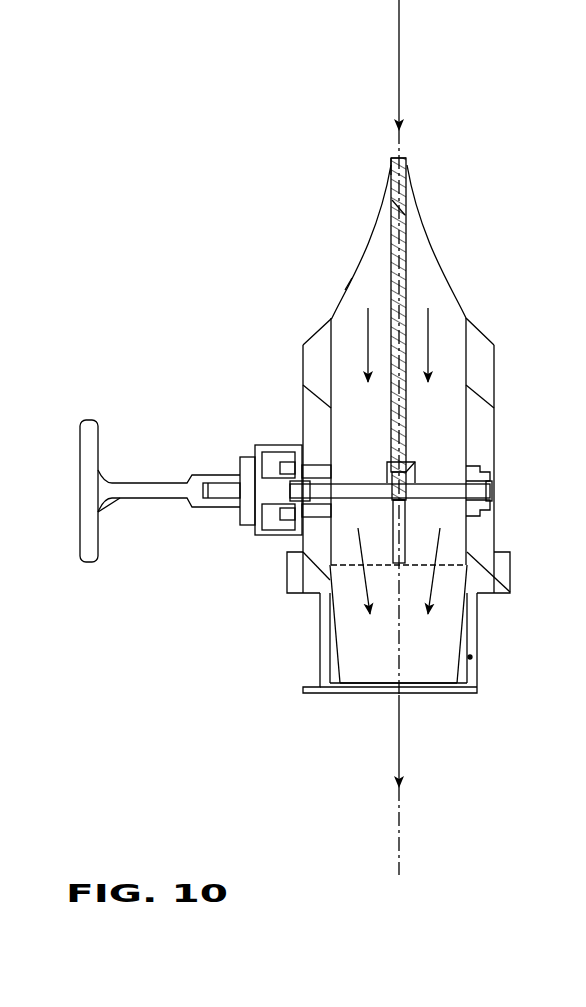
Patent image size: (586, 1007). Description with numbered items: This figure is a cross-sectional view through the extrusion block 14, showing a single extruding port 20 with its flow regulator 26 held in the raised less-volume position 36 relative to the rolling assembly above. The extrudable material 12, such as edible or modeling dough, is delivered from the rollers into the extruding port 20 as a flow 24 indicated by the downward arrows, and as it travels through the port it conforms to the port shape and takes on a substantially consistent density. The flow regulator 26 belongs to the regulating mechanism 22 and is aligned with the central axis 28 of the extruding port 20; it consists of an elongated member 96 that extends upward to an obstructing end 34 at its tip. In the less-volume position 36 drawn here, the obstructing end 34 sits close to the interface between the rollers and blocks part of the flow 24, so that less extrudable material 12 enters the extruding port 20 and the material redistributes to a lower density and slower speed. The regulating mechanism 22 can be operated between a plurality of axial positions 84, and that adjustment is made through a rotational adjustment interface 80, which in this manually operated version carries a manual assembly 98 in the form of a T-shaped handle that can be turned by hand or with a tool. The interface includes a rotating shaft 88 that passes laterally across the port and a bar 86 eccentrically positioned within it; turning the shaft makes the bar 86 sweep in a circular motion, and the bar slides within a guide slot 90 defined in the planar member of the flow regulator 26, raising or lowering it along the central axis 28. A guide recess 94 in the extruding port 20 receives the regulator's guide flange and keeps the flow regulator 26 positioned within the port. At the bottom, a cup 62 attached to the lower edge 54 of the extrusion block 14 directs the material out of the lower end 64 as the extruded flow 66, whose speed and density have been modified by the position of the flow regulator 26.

The extrudable material 12 is at (392, 70).
The extrusion block 14 is at (526, 520).
The extruding port 20 is at (330, 312).
The regulating mechanism 22 is at (256, 322).
The flow 24 is at (400, 73).
The flow regulator 26 is at (407, 277).
The central axis 28 is at (400, 838).
The obstructing end 34 is at (400, 157).
The less-volume position 36 is at (384, 160).
The lower edge 54 is at (303, 593).
The cup 62 is at (472, 657).
The lower end 64 is at (352, 696).
The extruded flow 66 is at (401, 740).
The rotational adjustment interface 80 is at (76, 536).
The plurality of axial positions 84 is at (366, 278).
The bar 86 is at (411, 462).
The rotating shaft 88 is at (353, 490).
The guide slot 90 is at (390, 463).
The guide recess 94 is at (402, 505).
The elongated member 96 is at (398, 208).
The manual assembly 98 is at (80, 460).